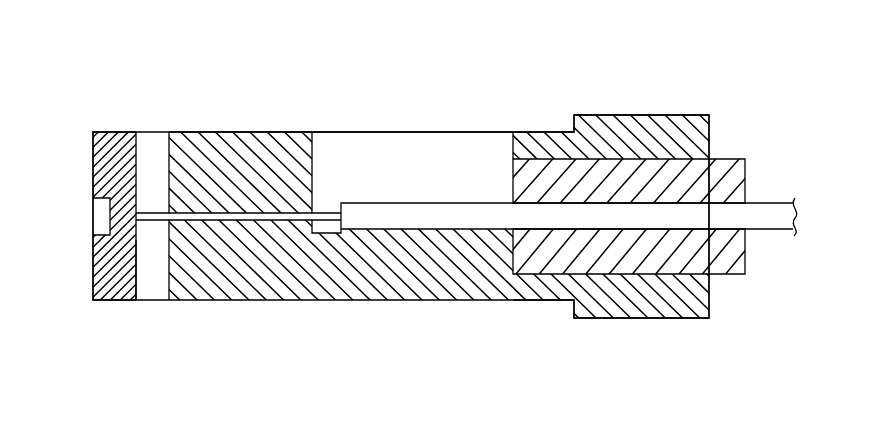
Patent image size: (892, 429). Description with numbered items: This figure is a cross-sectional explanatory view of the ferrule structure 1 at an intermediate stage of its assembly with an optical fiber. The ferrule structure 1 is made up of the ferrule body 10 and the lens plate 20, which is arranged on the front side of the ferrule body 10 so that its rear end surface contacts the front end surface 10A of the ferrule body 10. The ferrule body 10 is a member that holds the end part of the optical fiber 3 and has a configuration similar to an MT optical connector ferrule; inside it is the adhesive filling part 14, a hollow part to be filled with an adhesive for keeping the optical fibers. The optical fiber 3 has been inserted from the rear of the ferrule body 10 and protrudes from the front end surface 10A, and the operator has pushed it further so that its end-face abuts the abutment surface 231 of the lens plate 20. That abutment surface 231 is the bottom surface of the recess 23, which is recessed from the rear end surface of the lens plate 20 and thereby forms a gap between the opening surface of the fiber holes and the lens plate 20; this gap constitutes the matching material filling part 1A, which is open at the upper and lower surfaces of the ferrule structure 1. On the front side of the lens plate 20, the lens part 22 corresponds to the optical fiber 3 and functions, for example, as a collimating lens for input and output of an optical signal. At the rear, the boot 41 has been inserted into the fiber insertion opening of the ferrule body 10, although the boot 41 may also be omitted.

The ferrule structure 1 is at (386, 78).
The matching material filling part 1A is at (150, 92).
The front end surface 10A is at (167, 160).
The adhesive filling part 14 is at (470, 132).
The ferrule body 10 is at (542, 103).
The boot 41 is at (730, 160).
The lens plate 20 is at (102, 132).
The recess 23 is at (149, 272).
The lens part 22 is at (108, 217).
The abutment surface 231 is at (138, 268).
The optical fiber 3 is at (322, 216).